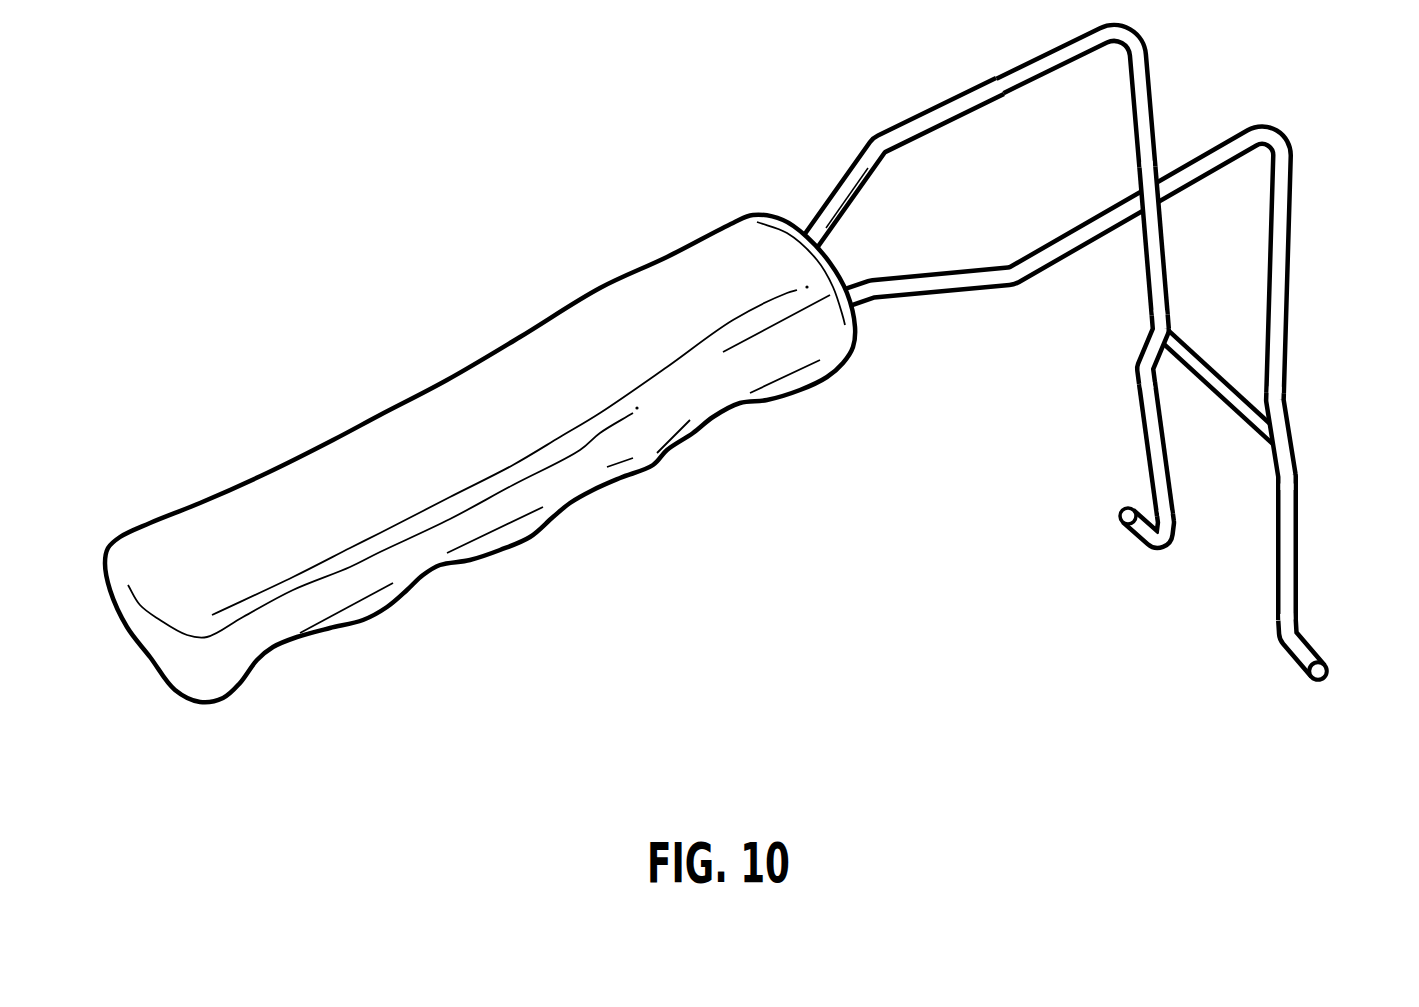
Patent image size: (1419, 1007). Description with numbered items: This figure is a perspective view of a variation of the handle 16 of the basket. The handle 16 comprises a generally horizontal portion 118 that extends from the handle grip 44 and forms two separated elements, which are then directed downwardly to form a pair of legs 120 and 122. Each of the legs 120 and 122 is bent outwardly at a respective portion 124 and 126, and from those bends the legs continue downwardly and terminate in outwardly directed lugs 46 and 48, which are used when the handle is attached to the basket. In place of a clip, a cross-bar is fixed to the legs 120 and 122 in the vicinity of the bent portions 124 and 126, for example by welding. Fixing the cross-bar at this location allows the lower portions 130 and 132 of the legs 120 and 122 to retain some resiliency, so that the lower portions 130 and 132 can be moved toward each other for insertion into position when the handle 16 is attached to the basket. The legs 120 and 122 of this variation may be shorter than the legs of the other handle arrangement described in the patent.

The handle 16 is at (480, 463).
The handle grip 44 is at (300, 563).
The lug 46 is at (1122, 522).
The lug 48 is at (1282, 655).
The horizontal portion 118 is at (923, 182).
The leg 120 is at (1149, 52).
The leg 122 is at (1295, 153).
The outward bend 124 is at (1143, 350).
The outward bend 126 is at (1290, 455).
The lower portion of leg 130 is at (1145, 452).
The lower portion of leg 132 is at (1299, 563).